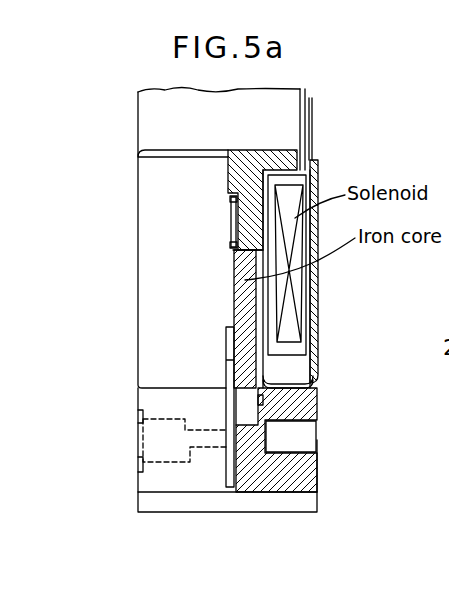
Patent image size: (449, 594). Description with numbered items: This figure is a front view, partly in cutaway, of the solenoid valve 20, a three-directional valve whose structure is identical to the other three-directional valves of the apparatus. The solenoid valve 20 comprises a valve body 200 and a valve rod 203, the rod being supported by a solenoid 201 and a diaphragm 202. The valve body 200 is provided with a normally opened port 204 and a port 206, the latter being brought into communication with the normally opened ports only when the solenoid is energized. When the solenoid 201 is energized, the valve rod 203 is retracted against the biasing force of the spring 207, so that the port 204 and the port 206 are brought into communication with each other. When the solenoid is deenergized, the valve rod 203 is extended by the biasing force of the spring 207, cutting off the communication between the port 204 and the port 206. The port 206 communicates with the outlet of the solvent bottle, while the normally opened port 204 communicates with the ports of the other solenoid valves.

The solenoid valve 20 is at (323, 158).
The valve body 200 is at (168, 503).
The solenoid 201 is at (166, 240).
The diaphragm 202 is at (245, 402).
The valve rod 203 is at (232, 390).
The port 204 is at (300, 437).
The port 206 is at (158, 437).
The spring 207 is at (232, 200).